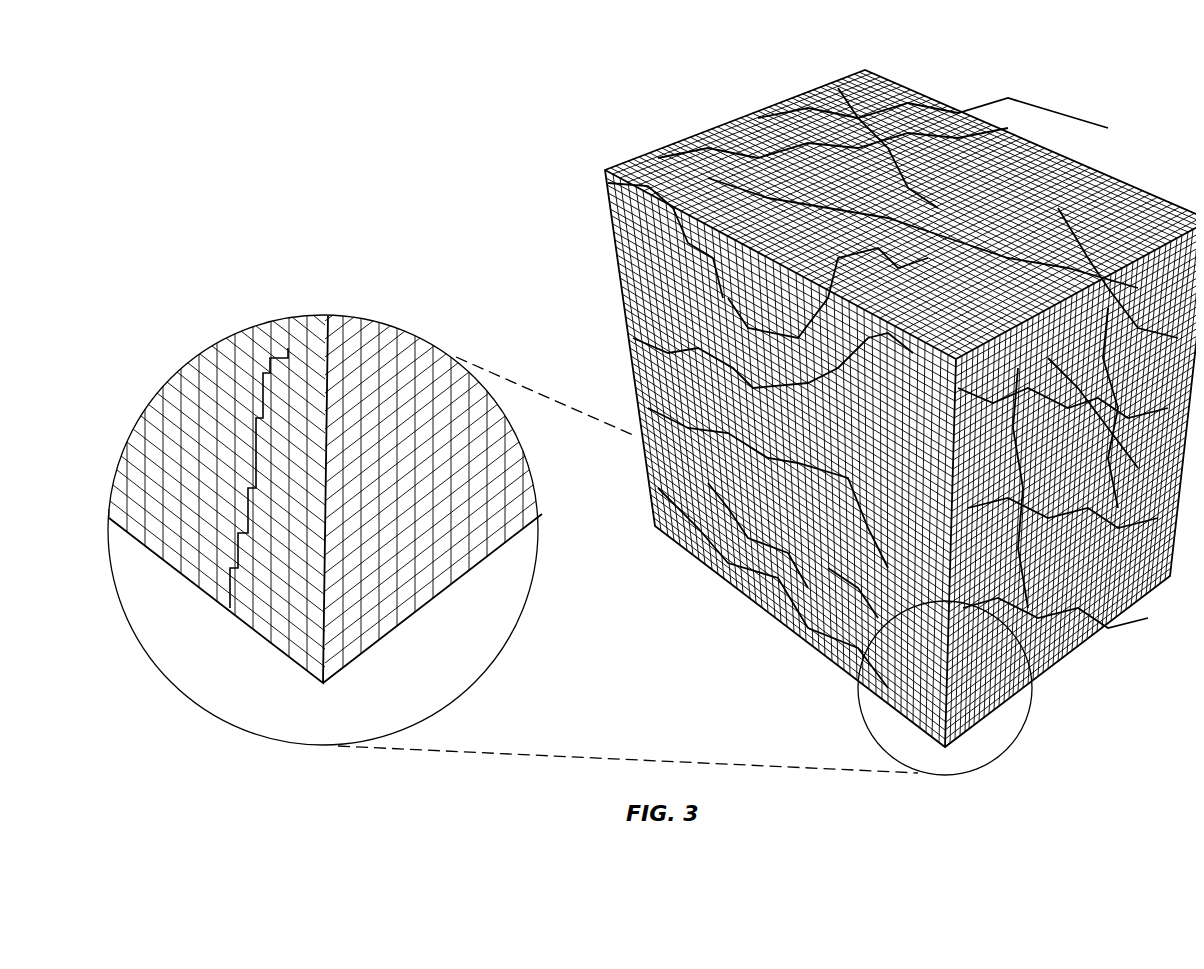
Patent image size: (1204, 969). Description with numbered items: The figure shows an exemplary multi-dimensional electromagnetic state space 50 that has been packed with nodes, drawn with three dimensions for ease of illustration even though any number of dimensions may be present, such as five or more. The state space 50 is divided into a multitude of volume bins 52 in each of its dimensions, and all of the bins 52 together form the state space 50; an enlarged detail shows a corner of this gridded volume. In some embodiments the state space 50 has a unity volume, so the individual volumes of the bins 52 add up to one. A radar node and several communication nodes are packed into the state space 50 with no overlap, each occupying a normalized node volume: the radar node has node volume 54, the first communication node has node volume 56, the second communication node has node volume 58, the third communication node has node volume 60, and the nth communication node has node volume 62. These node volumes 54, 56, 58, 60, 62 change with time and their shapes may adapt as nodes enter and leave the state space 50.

The electromagnetic state space 50 is at (602, 86).
The volume bins 52 is at (315, 676).
The node volume 54 is at (815, 560).
The node volume 56 is at (760, 440).
The node volume 58 is at (1080, 430).
The node volume 60 is at (1030, 612).
The node volume 62 is at (810, 220).